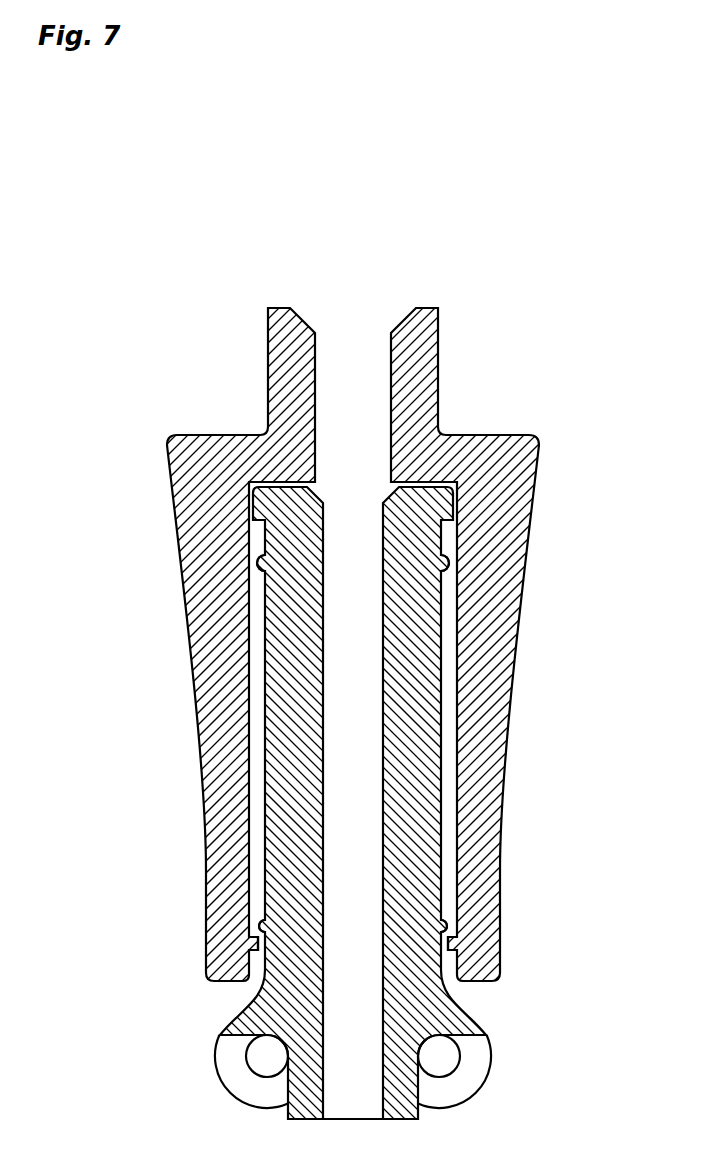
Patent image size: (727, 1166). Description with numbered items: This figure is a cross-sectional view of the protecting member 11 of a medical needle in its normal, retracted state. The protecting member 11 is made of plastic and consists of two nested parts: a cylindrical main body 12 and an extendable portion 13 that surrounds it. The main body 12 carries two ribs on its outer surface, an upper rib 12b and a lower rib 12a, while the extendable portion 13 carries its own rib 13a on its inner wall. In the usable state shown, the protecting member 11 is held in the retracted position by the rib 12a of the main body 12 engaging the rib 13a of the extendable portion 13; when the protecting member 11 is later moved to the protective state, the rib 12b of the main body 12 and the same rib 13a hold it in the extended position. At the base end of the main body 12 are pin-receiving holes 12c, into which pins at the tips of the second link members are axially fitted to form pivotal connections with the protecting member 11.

The protecting member 11 is at (388, 217).
The main body 12 is at (440, 753).
The rib of the main body 12a is at (448, 914).
The rib of the main body 12b is at (448, 564).
The pin-receiving hole 12c is at (458, 1062).
The extendable portion 13 is at (520, 433).
The rib of the extendable portion 13a is at (447, 943).